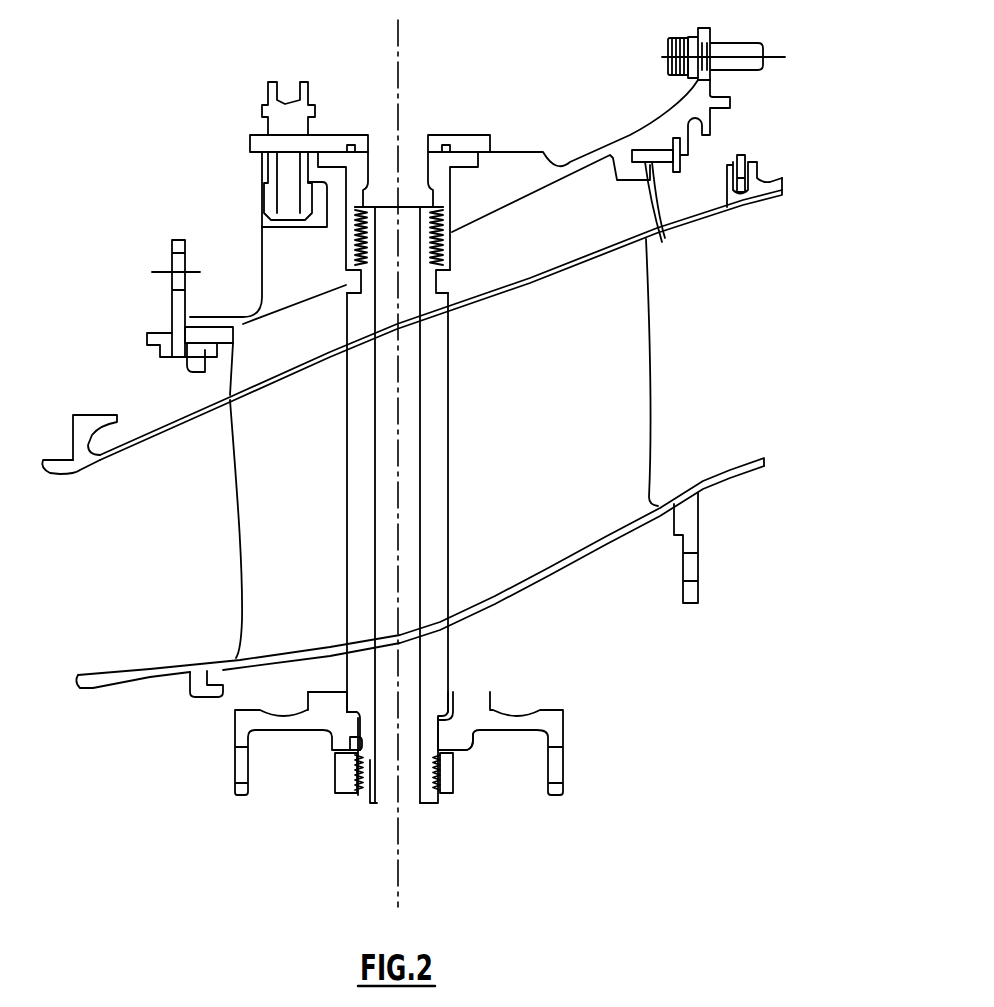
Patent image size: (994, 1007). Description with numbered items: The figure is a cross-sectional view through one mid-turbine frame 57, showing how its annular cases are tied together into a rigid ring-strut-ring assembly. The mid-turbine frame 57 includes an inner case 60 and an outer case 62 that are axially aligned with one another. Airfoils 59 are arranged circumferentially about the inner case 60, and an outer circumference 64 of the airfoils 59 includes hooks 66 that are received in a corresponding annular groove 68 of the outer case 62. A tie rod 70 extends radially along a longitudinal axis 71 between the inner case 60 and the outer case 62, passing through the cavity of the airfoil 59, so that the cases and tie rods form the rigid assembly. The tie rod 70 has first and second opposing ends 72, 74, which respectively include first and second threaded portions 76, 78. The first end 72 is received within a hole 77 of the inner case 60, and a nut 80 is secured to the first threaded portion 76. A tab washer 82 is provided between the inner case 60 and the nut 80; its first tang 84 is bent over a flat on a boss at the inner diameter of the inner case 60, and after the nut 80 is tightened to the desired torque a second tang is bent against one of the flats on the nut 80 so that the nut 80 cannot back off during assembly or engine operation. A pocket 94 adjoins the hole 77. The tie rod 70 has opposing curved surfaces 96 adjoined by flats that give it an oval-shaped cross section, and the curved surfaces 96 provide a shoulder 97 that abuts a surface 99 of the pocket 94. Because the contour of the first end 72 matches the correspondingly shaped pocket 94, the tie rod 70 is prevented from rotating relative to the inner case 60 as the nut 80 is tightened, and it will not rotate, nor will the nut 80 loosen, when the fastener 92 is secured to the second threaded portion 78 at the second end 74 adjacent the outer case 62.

The mid-turbine frame 57 is at (790, 105).
The airfoils 59 is at (648, 350).
The inner case 60 is at (487, 710).
The outer case 62 is at (523, 160).
The outer circumference 64 is at (642, 237).
The hooks 66 is at (652, 150).
The annular groove 68 is at (660, 236).
The tie rod 70 is at (455, 455).
The longitudinal axis 71 is at (400, 38).
The first end 72 is at (458, 745).
The second end 74 is at (455, 290).
The first threaded portion 76 is at (372, 792).
The hole 77 is at (353, 737).
The second threaded portion 78 is at (368, 233).
The nut 80 is at (335, 780).
The tab washer 82 is at (447, 795).
The first tang 84 is at (472, 745).
The fastener 92 is at (435, 160).
The pocket 94 is at (350, 690).
The curved surfaces 96 is at (450, 578).
The shoulder 97 is at (453, 690).
The surface 99 is at (353, 707).